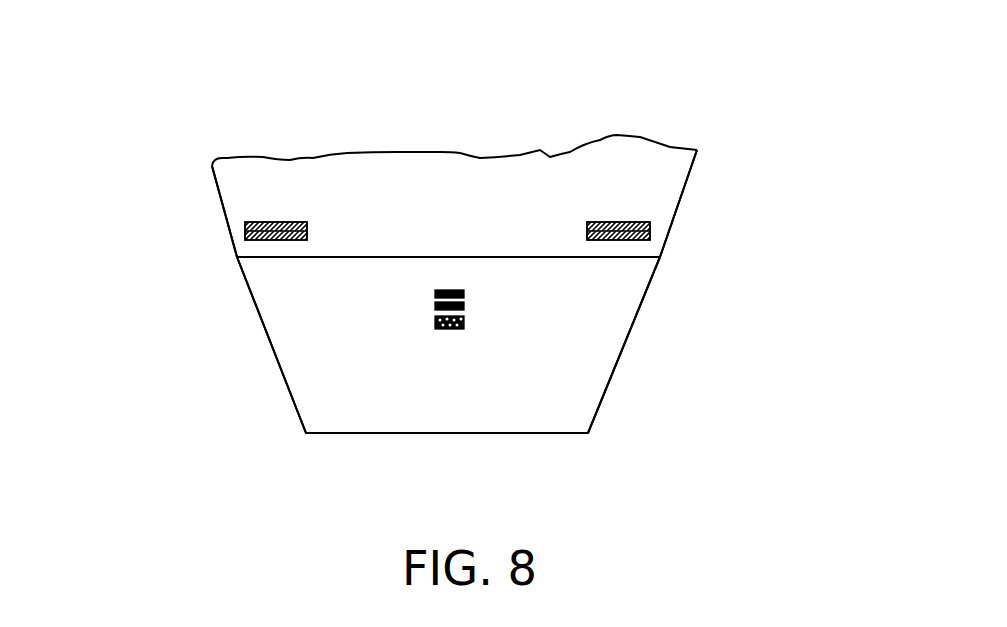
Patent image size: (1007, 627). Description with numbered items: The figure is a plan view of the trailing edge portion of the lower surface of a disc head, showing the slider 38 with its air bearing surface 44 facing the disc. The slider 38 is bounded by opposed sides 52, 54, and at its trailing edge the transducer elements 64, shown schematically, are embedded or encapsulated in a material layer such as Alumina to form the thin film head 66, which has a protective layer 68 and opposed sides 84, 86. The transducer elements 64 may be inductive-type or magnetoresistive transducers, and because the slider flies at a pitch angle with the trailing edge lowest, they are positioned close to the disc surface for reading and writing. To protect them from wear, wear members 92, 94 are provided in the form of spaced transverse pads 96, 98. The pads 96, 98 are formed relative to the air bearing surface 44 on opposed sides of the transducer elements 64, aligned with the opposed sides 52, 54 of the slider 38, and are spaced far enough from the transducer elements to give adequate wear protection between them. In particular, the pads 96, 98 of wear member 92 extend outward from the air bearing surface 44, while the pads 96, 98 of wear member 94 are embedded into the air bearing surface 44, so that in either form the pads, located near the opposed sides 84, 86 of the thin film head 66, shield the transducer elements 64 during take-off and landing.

The slider 38 is at (453, 140).
The air bearing surface 44 is at (422, 200).
The side of slider 52 is at (217, 198).
The side of slider 54 is at (687, 180).
The transducer elements 64 is at (473, 322).
The thin film head 66 is at (622, 357).
The protective layer 68 is at (470, 406).
The side of thin film head 84 is at (262, 327).
The side of thin film head 86 is at (593, 413).
The wear member 92 is at (233, 233).
The wear member 94 is at (652, 233).
The spaced transverse pad 96 is at (266, 222).
The spaced transverse pad 98 is at (600, 222).